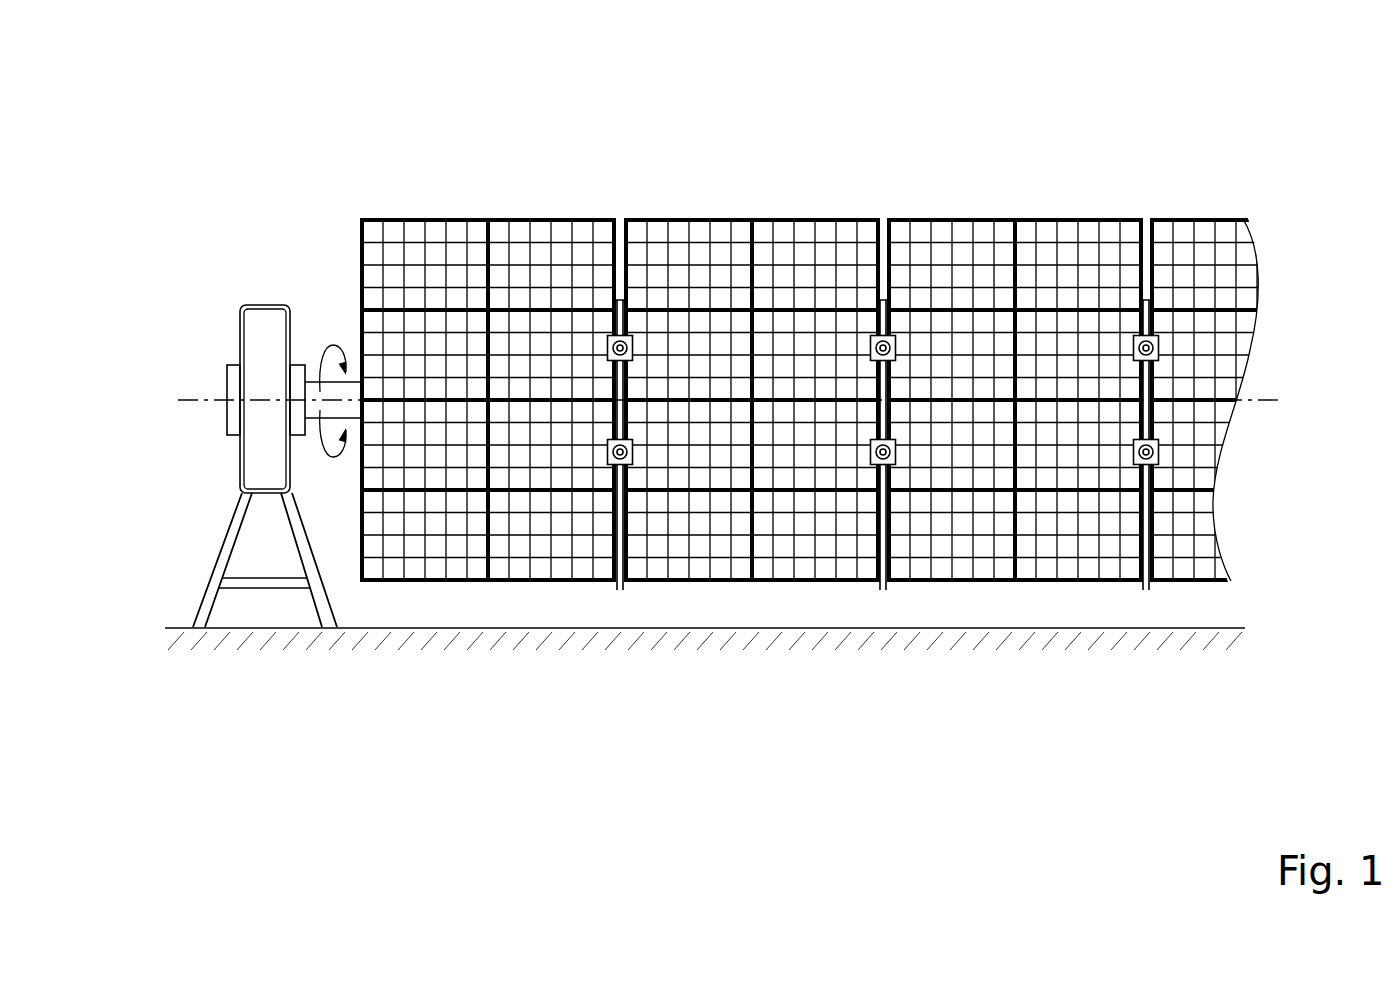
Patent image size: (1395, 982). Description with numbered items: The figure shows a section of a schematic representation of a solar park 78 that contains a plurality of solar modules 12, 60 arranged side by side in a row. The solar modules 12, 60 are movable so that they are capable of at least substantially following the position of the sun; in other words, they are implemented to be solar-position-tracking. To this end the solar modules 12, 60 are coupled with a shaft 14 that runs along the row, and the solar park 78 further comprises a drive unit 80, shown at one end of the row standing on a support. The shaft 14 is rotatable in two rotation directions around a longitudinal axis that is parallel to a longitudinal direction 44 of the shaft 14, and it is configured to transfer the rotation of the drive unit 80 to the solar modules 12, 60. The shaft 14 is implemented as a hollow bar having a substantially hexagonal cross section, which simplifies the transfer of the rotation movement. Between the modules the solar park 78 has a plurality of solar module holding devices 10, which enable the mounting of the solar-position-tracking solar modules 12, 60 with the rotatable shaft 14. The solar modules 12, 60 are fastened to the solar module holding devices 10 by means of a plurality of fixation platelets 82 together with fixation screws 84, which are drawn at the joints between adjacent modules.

The solar module holding device 10 is at (623, 388).
The solar module 12 is at (435, 263).
The shaft 14 is at (311, 392).
The longitudinal direction 44 is at (197, 390).
The solar module 60 is at (722, 262).
The solar park 78 is at (704, 150).
The drive unit 80 is at (262, 455).
The fixation platelet 82 is at (616, 346).
The fixation screw 84 is at (623, 346).